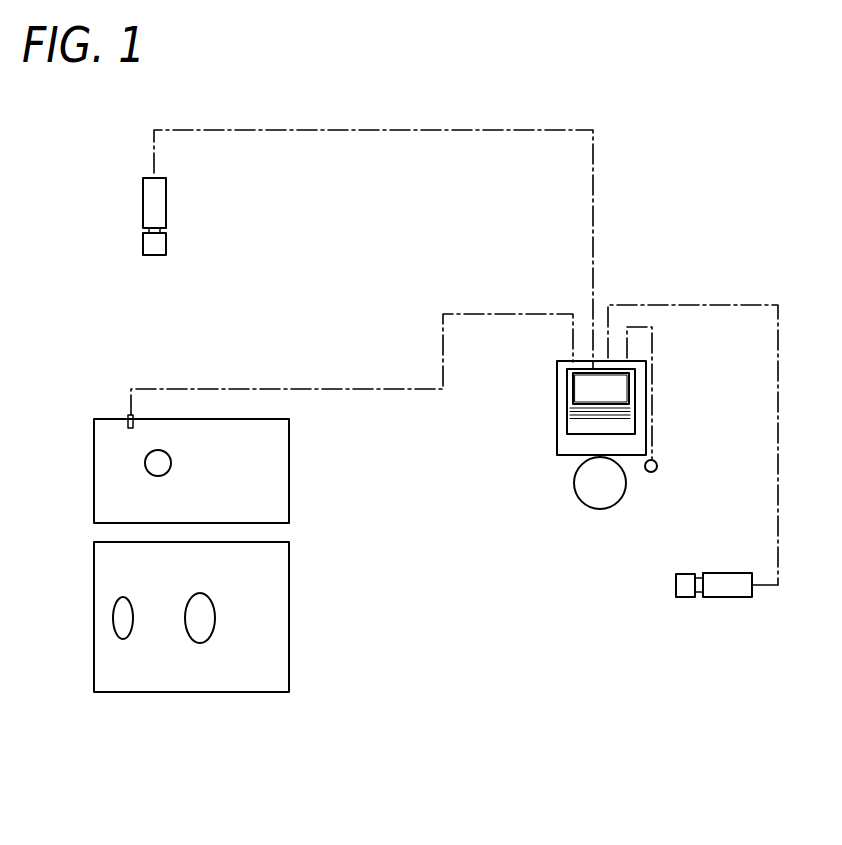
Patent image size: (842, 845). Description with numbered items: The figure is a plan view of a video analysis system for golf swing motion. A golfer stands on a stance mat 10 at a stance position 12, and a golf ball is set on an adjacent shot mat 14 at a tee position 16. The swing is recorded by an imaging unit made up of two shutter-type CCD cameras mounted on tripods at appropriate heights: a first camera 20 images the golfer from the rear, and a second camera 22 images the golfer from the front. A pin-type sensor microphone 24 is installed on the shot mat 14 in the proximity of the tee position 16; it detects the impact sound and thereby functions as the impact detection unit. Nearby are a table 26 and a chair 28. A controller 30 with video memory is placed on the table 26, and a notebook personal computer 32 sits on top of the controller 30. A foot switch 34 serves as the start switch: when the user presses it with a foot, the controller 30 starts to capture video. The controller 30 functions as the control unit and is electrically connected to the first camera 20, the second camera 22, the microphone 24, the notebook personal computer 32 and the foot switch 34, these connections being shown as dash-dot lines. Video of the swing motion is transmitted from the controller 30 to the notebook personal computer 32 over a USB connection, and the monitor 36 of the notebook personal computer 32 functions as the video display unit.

The stance mat 10 is at (275, 615).
The stance position 12 is at (202, 634).
The shot mat 14 is at (275, 476).
The tee position 16 is at (147, 467).
The first camera 20 is at (727, 590).
The second camera 22 is at (166, 200).
The pin-type sensor microphone 24 is at (128, 417).
The table 26 is at (567, 445).
The chair 28 is at (604, 500).
The controller with video memory 30 is at (575, 427).
The notebook personal computer 32 is at (572, 405).
The foot switch 34 is at (652, 473).
The monitor 36 is at (577, 387).